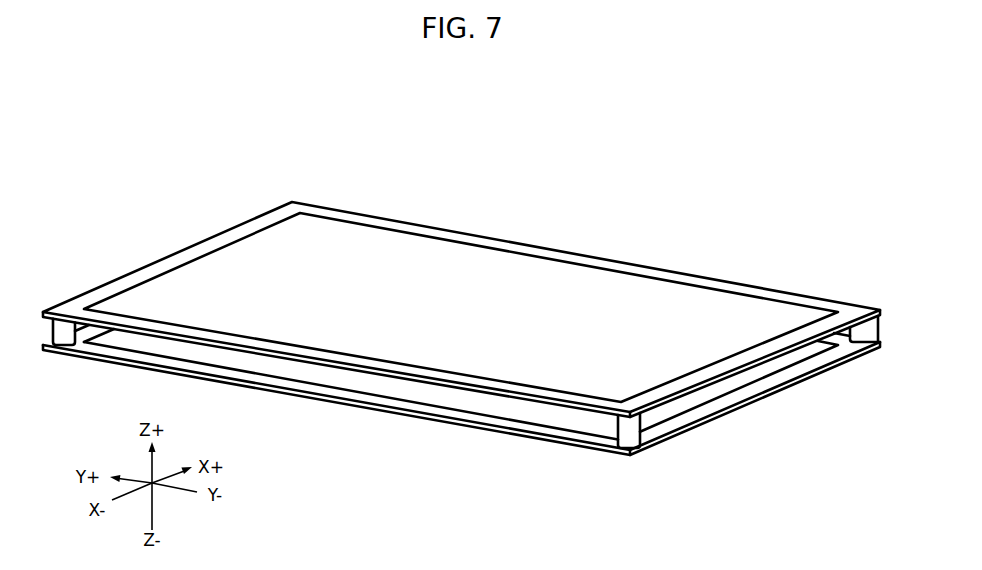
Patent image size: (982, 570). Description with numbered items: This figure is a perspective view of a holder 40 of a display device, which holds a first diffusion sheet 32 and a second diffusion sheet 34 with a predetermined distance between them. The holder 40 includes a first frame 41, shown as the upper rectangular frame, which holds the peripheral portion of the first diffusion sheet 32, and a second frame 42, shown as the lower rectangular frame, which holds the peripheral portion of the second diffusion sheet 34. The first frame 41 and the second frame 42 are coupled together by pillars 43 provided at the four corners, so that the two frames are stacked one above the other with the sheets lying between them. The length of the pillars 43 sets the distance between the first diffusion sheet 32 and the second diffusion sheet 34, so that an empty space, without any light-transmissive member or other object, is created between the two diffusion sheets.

The first diffusion sheet 32 is at (572, 298).
The second diffusion sheet 34 is at (580, 415).
The holder 40 is at (461, 351).
The first frame 41 is at (768, 288).
The second frame 42 is at (790, 385).
The pillars 43 is at (625, 440).